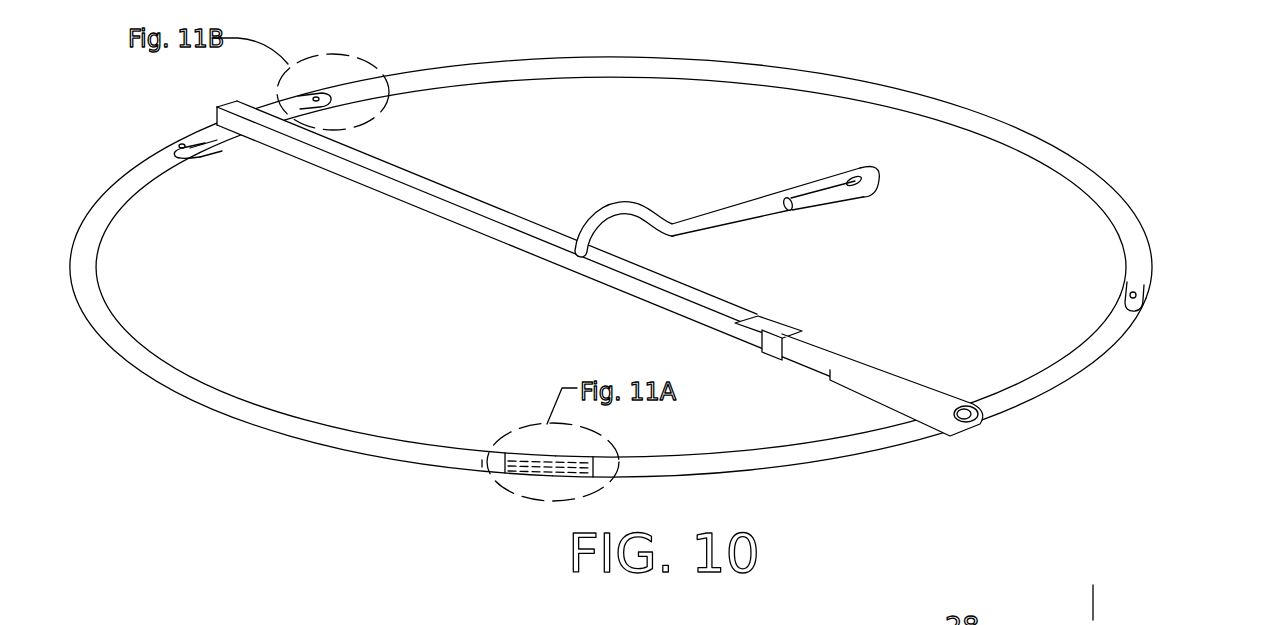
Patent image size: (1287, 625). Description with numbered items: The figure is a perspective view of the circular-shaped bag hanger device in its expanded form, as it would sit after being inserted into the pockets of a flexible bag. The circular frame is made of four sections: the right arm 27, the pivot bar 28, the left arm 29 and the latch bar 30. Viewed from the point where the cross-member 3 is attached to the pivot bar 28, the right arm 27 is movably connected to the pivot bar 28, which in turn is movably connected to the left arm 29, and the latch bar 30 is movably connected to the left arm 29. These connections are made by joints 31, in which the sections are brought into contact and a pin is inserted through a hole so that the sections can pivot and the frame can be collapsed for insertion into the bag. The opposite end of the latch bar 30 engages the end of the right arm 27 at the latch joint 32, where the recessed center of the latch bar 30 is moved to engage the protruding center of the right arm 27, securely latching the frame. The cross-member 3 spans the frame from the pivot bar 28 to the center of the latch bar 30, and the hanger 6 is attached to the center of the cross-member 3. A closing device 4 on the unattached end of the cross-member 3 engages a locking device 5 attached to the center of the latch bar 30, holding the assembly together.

The cross-member 3 is at (468, 205).
The closing device 4 is at (887, 389).
The locking device 5 is at (985, 418).
The hanger 6 is at (750, 203).
The right arm 27 is at (175, 393).
The pivot bar 28 is at (213, 138).
The left arm 29 is at (905, 92).
The latch bar 30 is at (1065, 383).
The joint 31 is at (318, 78).
The latch joint 32 is at (517, 484).